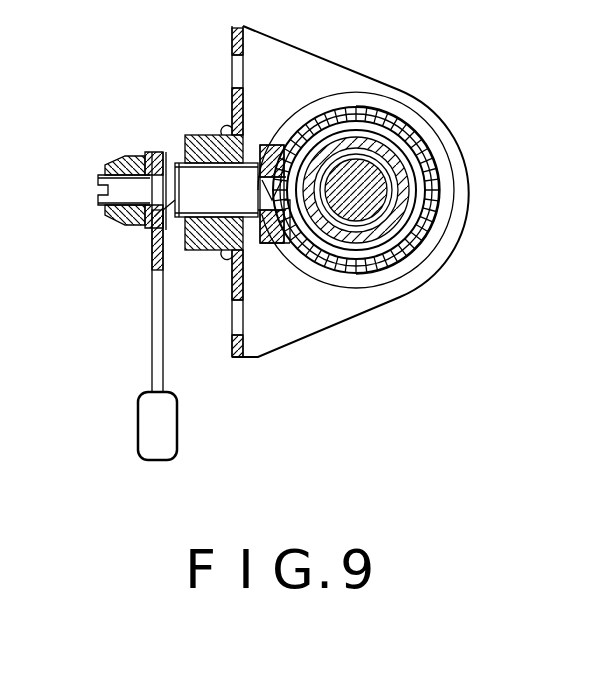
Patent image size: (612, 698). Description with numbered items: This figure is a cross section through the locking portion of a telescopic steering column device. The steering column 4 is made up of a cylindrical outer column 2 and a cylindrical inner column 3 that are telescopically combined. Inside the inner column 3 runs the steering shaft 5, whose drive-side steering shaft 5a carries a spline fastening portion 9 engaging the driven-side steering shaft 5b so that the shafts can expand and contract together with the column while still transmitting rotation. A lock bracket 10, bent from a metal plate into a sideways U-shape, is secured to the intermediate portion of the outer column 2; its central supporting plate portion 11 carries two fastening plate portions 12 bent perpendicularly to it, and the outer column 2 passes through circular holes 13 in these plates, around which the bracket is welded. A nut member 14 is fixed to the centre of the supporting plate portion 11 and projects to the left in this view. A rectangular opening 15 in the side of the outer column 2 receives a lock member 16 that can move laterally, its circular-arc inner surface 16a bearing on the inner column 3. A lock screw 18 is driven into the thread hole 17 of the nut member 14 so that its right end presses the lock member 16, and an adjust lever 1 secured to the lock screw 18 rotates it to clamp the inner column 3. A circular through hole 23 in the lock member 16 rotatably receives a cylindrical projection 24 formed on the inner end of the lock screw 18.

The adjust lever 1 is at (152, 362).
The outer column 2 is at (455, 165).
The inner column 3 is at (455, 188).
The steering column 4 is at (457, 213).
The bearing 5 is at (437, 262).
The drive-side steering shaft 5a is at (428, 228).
The driven-side steering shaft 5b is at (375, 276).
The spline fastening portion 9 is at (407, 275).
The lock bracket 10 is at (232, 42).
The supporting plate portion 11 is at (232, 100).
The fastening plate portions 12 is at (408, 100).
The circular holes 13 is at (430, 143).
The nut member 14 is at (197, 250).
The rectangular opening 15 is at (283, 243).
The lock member 16 is at (273, 243).
The inner surface 16a is at (326, 110).
The thread hole 17 is at (193, 190).
The lock screw 18 is at (152, 165).
The circular through hole 23 is at (265, 243).
The cylindrical projection 24 is at (270, 163).